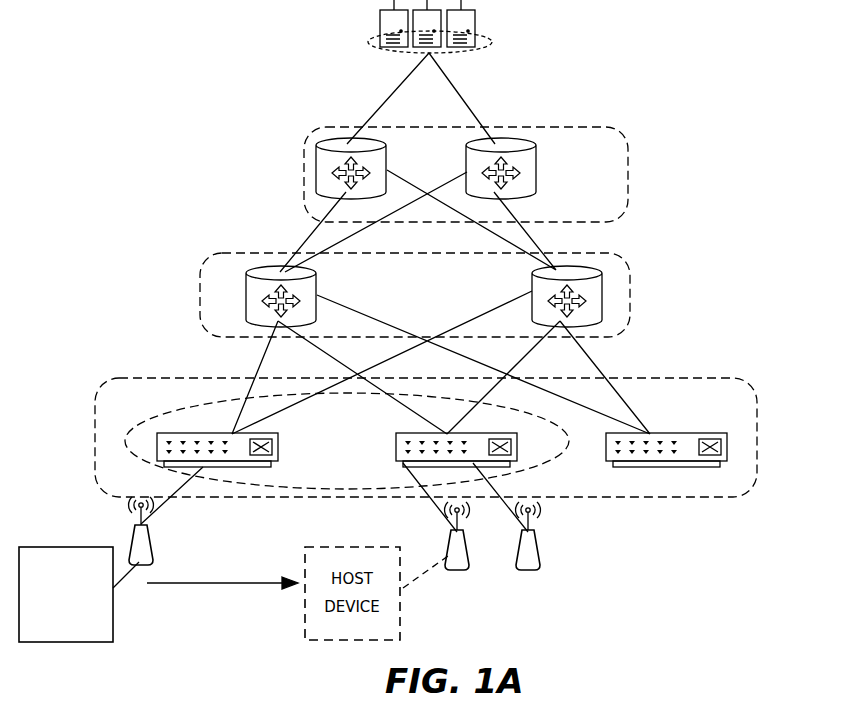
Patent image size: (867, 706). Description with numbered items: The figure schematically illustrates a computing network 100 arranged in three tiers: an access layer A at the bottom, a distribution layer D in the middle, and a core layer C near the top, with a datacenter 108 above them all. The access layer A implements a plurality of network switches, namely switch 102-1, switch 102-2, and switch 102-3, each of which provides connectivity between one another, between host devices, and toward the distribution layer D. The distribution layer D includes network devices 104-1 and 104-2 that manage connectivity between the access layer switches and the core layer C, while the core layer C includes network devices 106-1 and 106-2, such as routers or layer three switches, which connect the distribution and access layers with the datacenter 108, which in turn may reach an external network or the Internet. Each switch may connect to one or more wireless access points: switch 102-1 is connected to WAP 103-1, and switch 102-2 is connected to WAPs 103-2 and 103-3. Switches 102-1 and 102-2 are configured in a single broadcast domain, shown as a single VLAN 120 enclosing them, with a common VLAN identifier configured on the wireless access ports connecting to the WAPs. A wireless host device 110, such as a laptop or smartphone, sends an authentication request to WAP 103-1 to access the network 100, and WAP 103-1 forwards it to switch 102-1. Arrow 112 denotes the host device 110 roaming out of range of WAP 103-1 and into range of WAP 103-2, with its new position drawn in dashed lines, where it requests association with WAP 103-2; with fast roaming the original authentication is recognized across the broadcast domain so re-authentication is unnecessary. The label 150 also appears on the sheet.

The computing network 100 is at (666, 15).
The datacenter 108 is at (480, 42).
The network device 106-1 is at (387, 150).
The network device 106-2 is at (537, 150).
The network device 104-1 is at (316, 278).
The network device 104-2 is at (533, 279).
The switch 102-1 is at (277, 436).
The switch 102-2 is at (396, 447).
The switch 102-3 is at (680, 433).
The VLAN 120 is at (560, 463).
The host device 110 is at (59, 547).
The WAP 103-1 is at (185, 536).
The WAP 103-2 is at (463, 570).
The WAP 103-3 is at (540, 562).
The arrow 112 is at (186, 586).
The network 150 is at (644, 698).
The core layer C is at (304, 173).
The distribution layer D is at (200, 305).
The access layer A is at (100, 388).